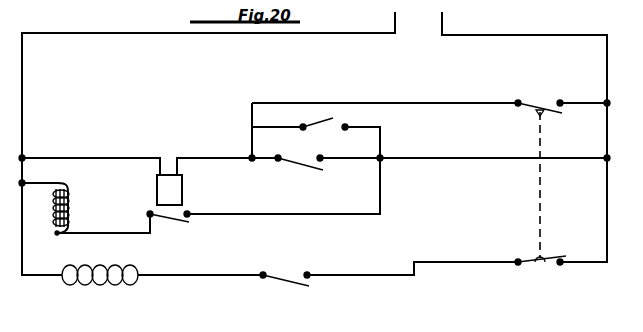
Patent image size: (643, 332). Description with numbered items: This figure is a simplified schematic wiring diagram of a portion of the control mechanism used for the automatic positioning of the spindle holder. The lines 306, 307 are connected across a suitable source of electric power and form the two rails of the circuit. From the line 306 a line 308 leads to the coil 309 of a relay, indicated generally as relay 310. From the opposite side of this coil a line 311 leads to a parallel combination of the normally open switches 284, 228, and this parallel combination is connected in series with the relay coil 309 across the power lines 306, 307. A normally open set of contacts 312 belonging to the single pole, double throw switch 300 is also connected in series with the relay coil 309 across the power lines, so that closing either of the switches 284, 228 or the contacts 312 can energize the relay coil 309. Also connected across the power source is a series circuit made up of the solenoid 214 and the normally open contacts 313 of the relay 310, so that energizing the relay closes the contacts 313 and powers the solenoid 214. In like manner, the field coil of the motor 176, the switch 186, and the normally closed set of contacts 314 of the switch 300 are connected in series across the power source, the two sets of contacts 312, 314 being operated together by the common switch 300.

The line 306 is at (66, 33).
The line 307 is at (490, 35).
The normally open set of contacts 312 is at (546, 106).
The single pole, double throw switch 300 is at (548, 133).
The normally closed set of contacts 314 is at (527, 264).
The line 308 is at (97, 158).
The line 311 is at (205, 158).
The coil 309 is at (163, 196).
The solenoid 214 is at (77, 208).
The normally open contacts 313 is at (167, 221).
The relay 310 is at (196, 208).
The normally open switch 284 is at (326, 126).
The normally open switch 228 is at (300, 164).
The switch 186 is at (287, 283).
The motor 176 is at (93, 287).